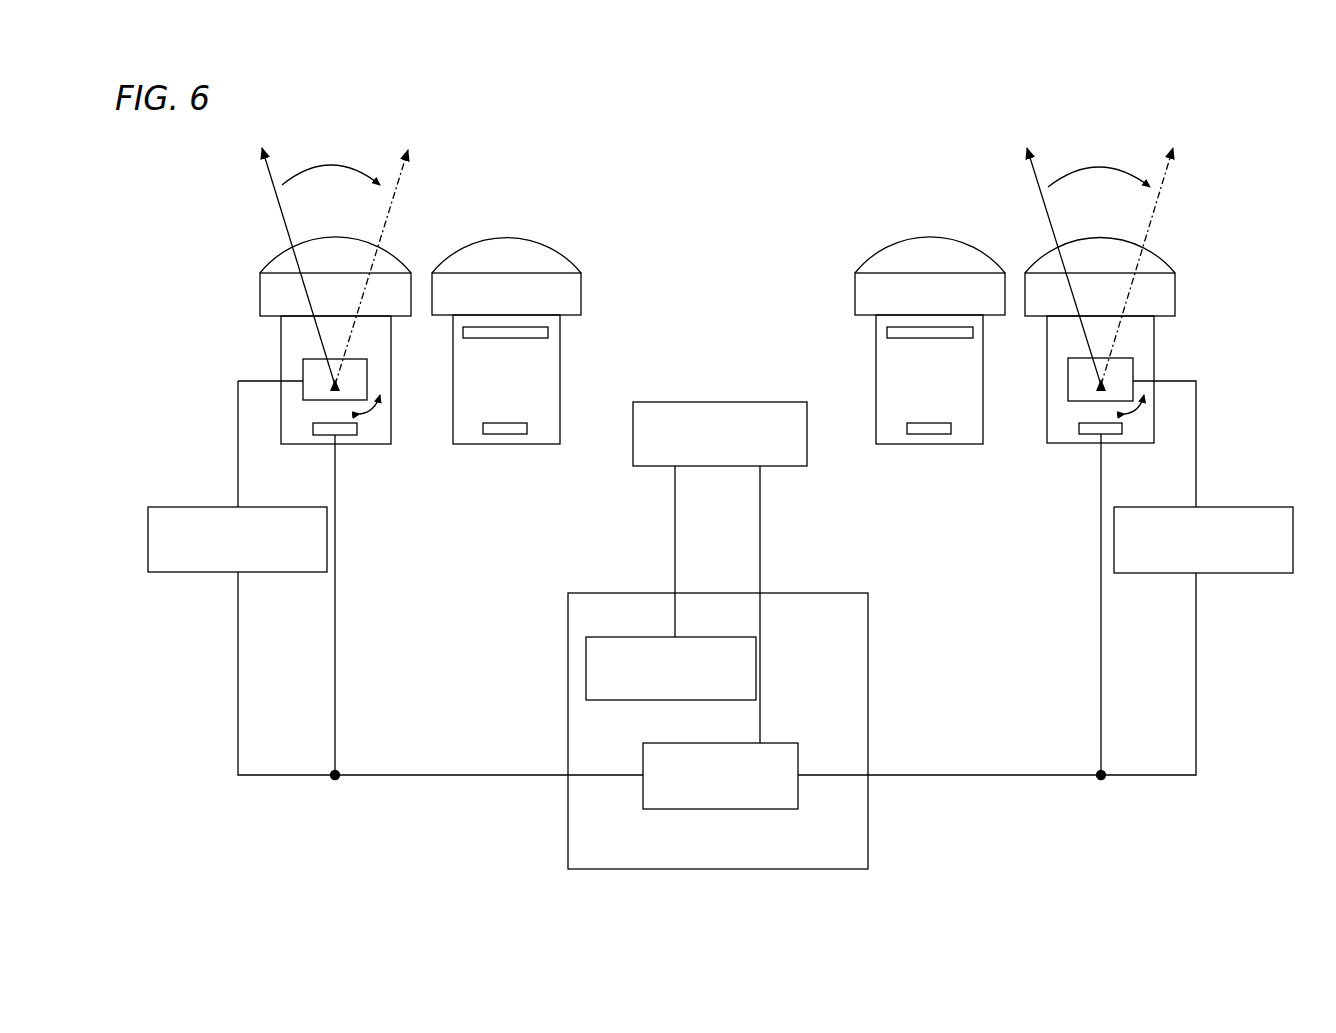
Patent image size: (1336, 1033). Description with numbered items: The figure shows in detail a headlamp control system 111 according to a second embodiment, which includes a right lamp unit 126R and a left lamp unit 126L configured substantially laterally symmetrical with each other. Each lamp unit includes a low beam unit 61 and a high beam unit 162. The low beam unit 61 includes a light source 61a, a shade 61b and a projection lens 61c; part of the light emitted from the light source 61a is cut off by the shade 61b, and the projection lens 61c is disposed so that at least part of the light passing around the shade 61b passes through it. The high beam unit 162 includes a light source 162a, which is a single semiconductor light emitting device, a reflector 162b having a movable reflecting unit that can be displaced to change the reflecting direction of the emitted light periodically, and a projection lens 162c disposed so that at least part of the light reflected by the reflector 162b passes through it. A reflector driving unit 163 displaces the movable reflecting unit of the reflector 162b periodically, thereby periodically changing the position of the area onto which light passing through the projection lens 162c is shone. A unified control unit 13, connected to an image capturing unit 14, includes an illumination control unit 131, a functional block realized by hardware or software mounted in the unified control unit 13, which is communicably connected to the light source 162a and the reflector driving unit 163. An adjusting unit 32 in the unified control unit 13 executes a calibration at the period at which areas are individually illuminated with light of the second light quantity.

The unified control unit 13 is at (748, 731).
The image capturing unit 14 is at (718, 402).
The adjusting unit 32 is at (632, 702).
The illumination control unit 131 is at (778, 742).
The low beam unit 61 is at (532, 351).
The light source 61a is at (515, 432).
The shade 61b is at (530, 336).
The projection lens 61c is at (535, 256).
The headlamp control system 111 is at (728, 240).
The left lamp unit 126L is at (432, 235).
The right lamp unit 126R is at (1000, 237).
The high beam unit 162 is at (324, 321).
The light source 162a is at (322, 428).
The reflector 162b is at (360, 378).
The projection lens 162c is at (282, 265).
The reflector driving unit 163 is at (200, 575).